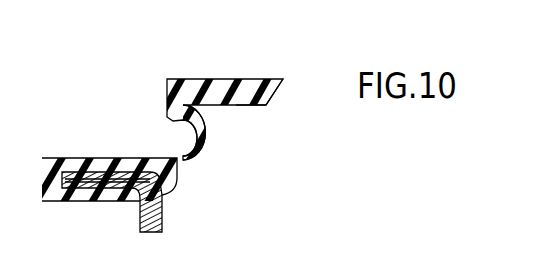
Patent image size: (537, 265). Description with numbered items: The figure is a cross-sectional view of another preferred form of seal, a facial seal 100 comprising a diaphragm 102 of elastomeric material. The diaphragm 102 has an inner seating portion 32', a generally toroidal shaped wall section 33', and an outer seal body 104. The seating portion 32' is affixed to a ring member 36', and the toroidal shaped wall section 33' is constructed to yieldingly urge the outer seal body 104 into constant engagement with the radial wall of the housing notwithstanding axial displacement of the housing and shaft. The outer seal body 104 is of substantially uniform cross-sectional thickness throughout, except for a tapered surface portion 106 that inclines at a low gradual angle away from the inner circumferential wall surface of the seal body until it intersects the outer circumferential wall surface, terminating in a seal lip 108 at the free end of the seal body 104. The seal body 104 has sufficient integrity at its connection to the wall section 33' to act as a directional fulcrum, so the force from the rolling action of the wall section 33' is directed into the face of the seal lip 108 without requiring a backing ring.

The facial seal 100 is at (163, 121).
The diaphragm 102 is at (205, 143).
The outer seal body 104 is at (215, 80).
The tapered surface portion 106 is at (277, 91).
The seal lip 108 is at (281, 84).
The toroidal shaped wall section 33' is at (166, 138).
The inner seating portion 32' is at (105, 197).
The ring member 36' is at (134, 202).